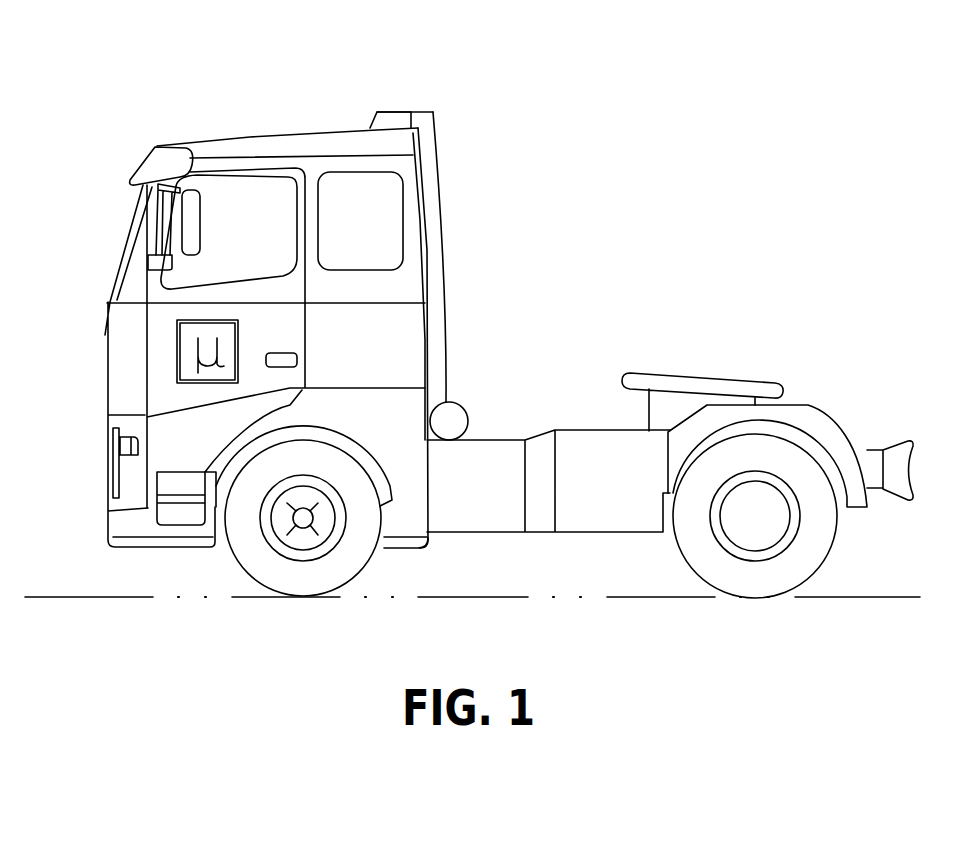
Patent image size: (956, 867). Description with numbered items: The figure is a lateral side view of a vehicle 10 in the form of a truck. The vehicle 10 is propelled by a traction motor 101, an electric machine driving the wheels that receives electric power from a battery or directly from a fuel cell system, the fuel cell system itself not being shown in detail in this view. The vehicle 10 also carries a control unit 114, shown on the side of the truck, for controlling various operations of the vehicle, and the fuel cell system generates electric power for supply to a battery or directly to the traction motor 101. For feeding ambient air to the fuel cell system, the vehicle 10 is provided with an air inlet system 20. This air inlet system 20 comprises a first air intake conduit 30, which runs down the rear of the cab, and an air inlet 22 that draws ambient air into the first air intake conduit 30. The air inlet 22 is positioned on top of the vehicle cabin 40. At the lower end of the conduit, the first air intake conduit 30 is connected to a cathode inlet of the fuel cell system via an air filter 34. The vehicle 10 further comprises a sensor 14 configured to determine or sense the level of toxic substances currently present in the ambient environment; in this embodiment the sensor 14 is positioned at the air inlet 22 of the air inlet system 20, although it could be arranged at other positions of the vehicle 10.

The vehicle 10 is at (512, 112).
The air inlet system 20 is at (482, 223).
The first air intake conduit 30 is at (437, 300).
The vehicle cabin 40 is at (285, 148).
The air inlet 22 is at (373, 127).
The sensor 14 is at (397, 120).
The air filter 34 is at (447, 422).
The control unit 114 is at (177, 352).
The traction motor 101 is at (302, 528).